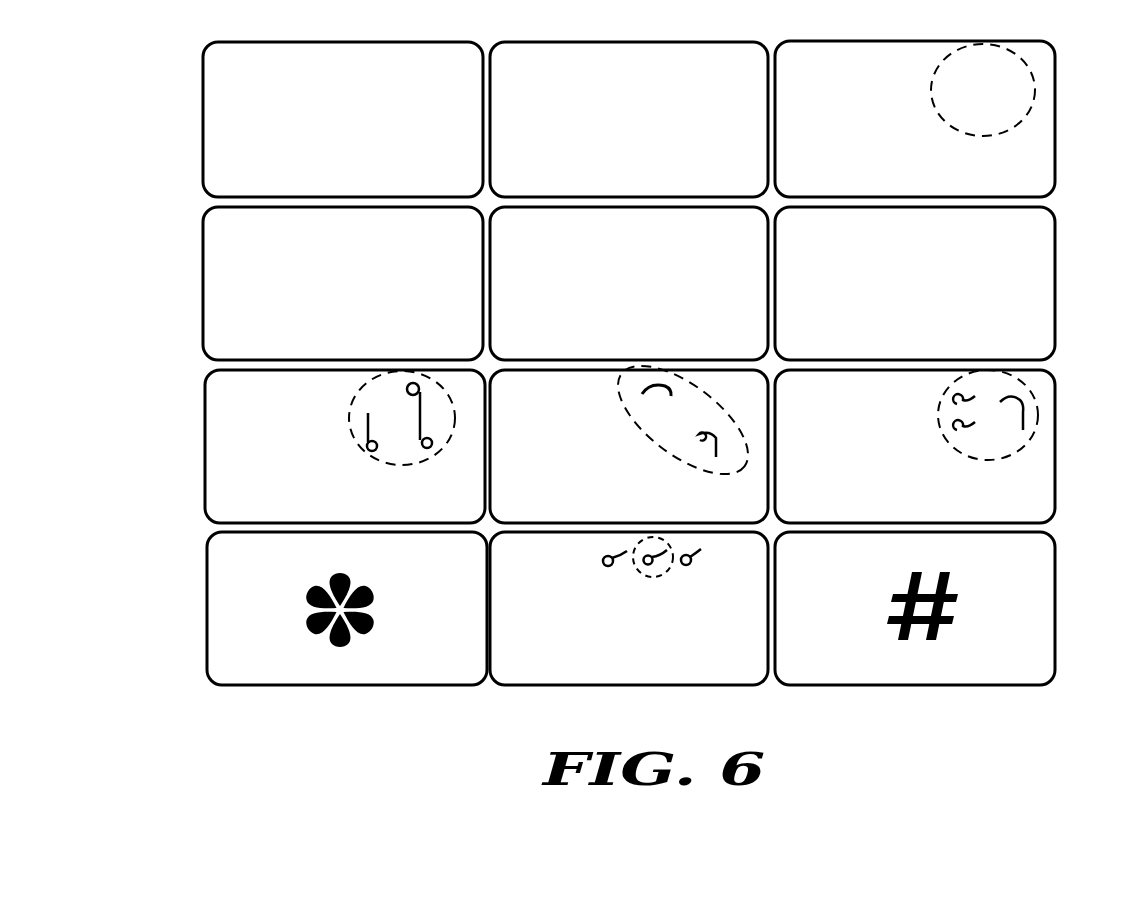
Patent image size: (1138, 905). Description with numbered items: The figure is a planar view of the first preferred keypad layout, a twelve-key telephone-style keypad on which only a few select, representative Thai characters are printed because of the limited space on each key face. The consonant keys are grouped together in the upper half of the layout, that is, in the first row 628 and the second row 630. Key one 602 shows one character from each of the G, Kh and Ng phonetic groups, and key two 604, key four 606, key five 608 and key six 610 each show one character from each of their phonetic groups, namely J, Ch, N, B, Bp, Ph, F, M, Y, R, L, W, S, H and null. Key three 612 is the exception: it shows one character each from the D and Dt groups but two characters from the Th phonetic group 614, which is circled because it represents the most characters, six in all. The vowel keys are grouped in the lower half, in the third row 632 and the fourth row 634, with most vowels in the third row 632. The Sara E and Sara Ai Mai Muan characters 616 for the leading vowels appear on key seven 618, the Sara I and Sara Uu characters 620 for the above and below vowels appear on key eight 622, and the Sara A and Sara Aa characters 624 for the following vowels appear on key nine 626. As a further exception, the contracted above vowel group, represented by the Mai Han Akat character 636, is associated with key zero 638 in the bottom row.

The key "1" 602 is at (274, 184).
The key "2" 604 is at (559, 184).
The key "4" 606 is at (270, 347).
The key "5" 608 is at (559, 347).
The key "6" 610 is at (843, 347).
The key "3" 612 is at (843, 184).
The Th phonetic group 614 is at (1035, 88).
The Sara E and Sara Ai Mai Muan characters 616 is at (350, 410).
The key "7" 618 is at (272, 510).
The Sara I and Sara Uu characters 620 is at (637, 418).
The key "8" 622 is at (559, 510).
The Sara A and Sara Aa characters 624 is at (1028, 392).
The key "9" 626 is at (842, 510).
The first row 628 is at (188, 43).
The second row 630 is at (188, 207).
The third row 632 is at (188, 370).
The fourth row 634 is at (188, 532).
The Mai Han Akat (D1) character 636 is at (650, 580).
The key "0" 638 is at (559, 672).